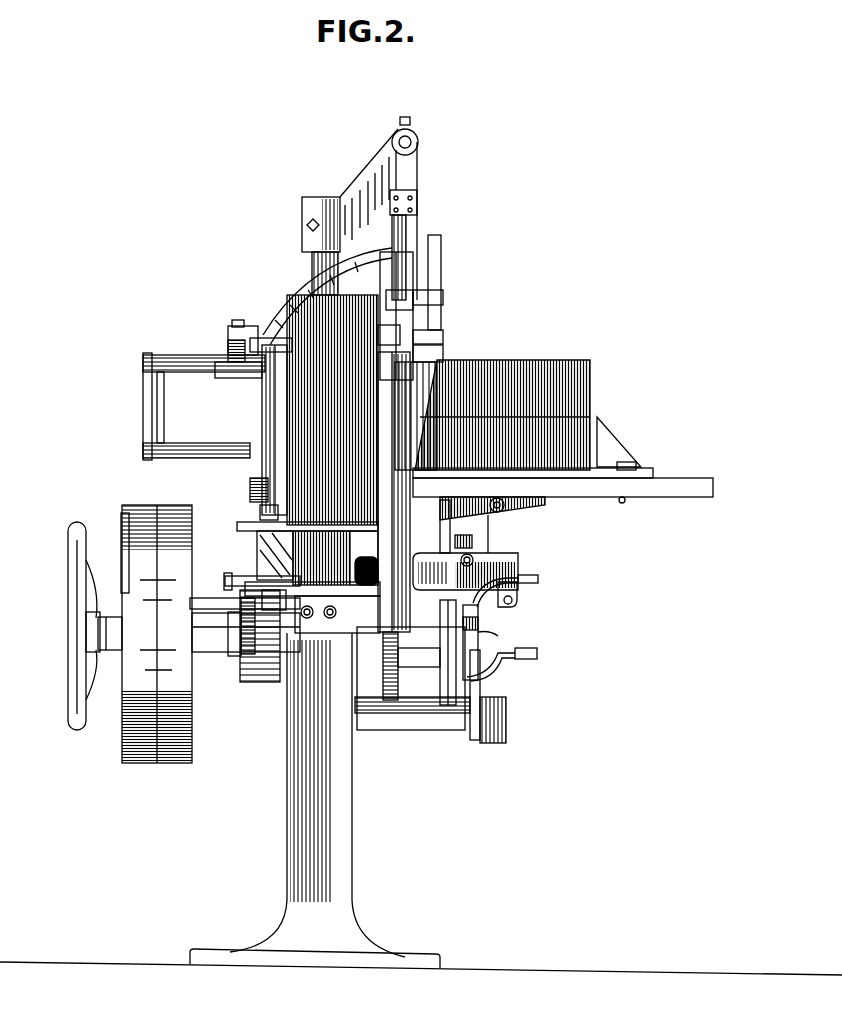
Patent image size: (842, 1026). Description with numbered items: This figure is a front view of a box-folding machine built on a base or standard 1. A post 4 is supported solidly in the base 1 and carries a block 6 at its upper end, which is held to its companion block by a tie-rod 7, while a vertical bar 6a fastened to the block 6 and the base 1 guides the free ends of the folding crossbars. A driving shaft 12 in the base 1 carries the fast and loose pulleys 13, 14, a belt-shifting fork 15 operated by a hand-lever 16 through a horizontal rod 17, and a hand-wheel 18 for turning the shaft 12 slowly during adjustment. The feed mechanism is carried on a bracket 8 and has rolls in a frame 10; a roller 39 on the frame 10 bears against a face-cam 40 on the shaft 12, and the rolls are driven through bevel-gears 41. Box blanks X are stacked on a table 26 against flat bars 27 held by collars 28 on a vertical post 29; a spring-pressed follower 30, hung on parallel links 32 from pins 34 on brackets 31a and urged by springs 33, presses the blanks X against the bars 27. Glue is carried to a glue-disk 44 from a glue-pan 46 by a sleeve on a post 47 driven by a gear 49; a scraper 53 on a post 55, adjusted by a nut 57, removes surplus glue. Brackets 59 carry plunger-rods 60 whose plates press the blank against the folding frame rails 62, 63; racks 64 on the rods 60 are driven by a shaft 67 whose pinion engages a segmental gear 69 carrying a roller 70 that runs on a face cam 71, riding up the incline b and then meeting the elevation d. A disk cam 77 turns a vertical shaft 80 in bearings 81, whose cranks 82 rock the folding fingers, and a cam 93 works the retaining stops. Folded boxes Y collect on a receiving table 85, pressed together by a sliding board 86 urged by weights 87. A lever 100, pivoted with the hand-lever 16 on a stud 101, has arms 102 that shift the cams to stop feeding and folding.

The base or standard 1 is at (297, 858).
The post 4 is at (322, 268).
The block 6 is at (375, 168).
The vertical bar 6a is at (412, 198).
The tie-rod 7 is at (407, 142).
The bracket 8 is at (390, 605).
The frame 10 is at (420, 455).
The driving shaft 12 is at (197, 650).
The fast pulley 13 is at (157, 634).
The loose pulley 14 is at (199, 632).
The belt-shifting fork 15 is at (123, 515).
The hand-lever 16 is at (540, 578).
The horizontal rod 17 is at (200, 626).
The hand-wheel 18 is at (76, 612).
The table 26 is at (265, 525).
The flat bars 27 is at (400, 332).
The collars 28 is at (415, 296).
The vertical post 29 is at (405, 226).
The spring-pressed follower 30 is at (275, 412).
The brackets 31a is at (257, 332).
The parallel links 32 is at (222, 377).
The springs 33 is at (256, 488).
The pins 34 is at (236, 328).
The roller 39 is at (480, 615).
The face-cam 40 is at (445, 690).
The bevel-gear 41 is at (385, 668).
The glue-disk 44 is at (455, 528).
The glue-pan 46 is at (518, 592).
The post 47 is at (503, 508).
The gear 49 is at (472, 543).
The scraper 53 is at (475, 455).
The post 55 is at (490, 540).
The nut 57 is at (474, 560).
The hangers or brackets 59 is at (284, 540).
The plunger-rod 60 is at (203, 462).
The folding frame rail 62 is at (415, 356).
The folding frame rail 63 is at (270, 513).
The racks 64 is at (163, 388).
The revoluble shaft 67 is at (258, 560).
The segmental gear 69 is at (226, 578).
The roller 70 is at (268, 598).
The face cam 71 is at (260, 672).
The disk cam 77 is at (450, 692).
The vertical shaft 80 is at (442, 248).
The bearings 81 is at (445, 306).
The cranks 82 is at (446, 336).
The receiving table 85 is at (680, 486).
The sliding board 86 is at (617, 452).
The weights 87 is at (500, 720).
The cam 93 is at (362, 660).
The lever 100 is at (540, 654).
The stud 101 is at (475, 740).
The arms 102 is at (498, 636).
The box blanks X is at (305, 318).
The folded boxes Y is at (560, 378).
The incline b is at (268, 606).
The elevation d is at (237, 652).